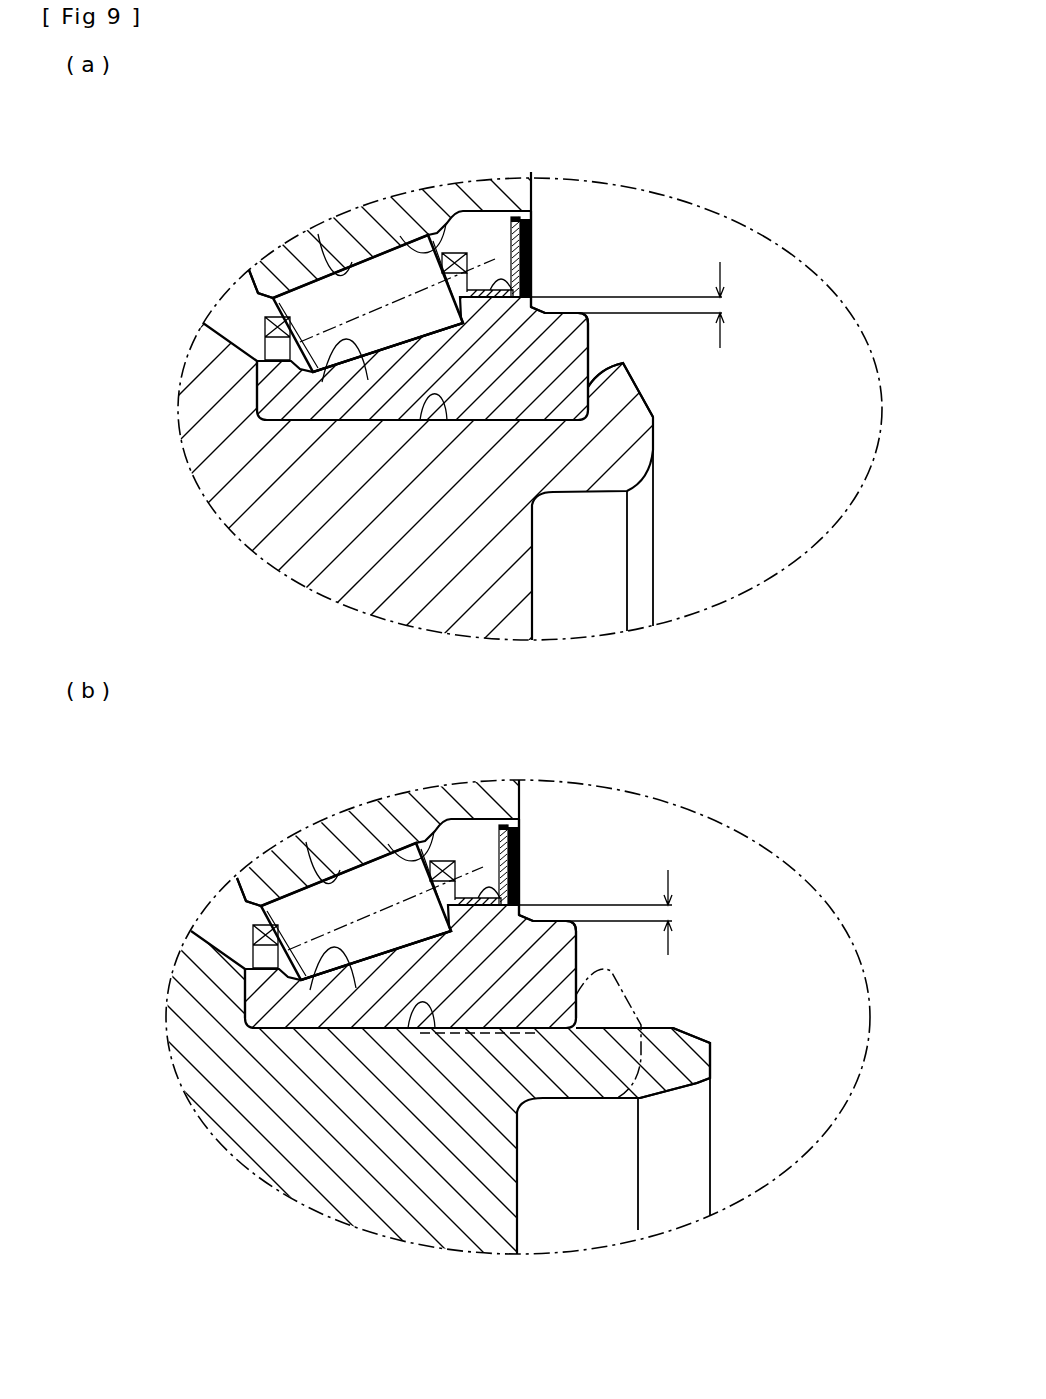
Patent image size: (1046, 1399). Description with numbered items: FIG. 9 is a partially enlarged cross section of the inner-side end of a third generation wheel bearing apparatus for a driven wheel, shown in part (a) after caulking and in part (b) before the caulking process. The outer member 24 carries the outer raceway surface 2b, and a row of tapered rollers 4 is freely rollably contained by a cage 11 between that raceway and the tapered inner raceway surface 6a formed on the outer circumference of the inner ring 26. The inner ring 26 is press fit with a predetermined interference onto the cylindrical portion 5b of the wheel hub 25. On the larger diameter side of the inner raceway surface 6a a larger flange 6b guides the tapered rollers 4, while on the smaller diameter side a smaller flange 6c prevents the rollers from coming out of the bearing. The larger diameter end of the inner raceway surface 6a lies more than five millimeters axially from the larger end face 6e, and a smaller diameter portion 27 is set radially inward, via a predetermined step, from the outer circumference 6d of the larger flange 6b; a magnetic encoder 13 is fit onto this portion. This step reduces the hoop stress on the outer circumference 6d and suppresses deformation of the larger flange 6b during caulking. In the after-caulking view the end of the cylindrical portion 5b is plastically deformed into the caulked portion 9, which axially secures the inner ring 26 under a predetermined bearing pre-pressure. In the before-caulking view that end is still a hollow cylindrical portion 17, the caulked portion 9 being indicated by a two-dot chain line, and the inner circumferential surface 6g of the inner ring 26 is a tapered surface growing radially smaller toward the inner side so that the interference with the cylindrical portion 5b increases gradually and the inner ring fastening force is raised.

The outer raceway surface 2b is at (283, 278).
The tapered rollers 4 is at (373, 287).
The cylindrical portion 5b is at (430, 393).
The inner raceway surface 6a is at (334, 348).
The larger flange 6b is at (470, 250).
The smaller flange 6c is at (262, 383).
The outer circumference of the larger flange 6d is at (517, 299).
The larger end face 6e is at (590, 353).
The inner circumferential surface 6g is at (545, 495).
The caulked portion 9 is at (608, 405).
The cage 11 is at (258, 272).
The magnetic encoder 13 is at (538, 250).
The hollow cylindrical portion 17 is at (673, 1062).
The outer member 24 is at (443, 193).
The wheel hub 25 is at (258, 478).
The inner ring 26 is at (445, 376).
The smaller diameter portion 27 is at (557, 287).